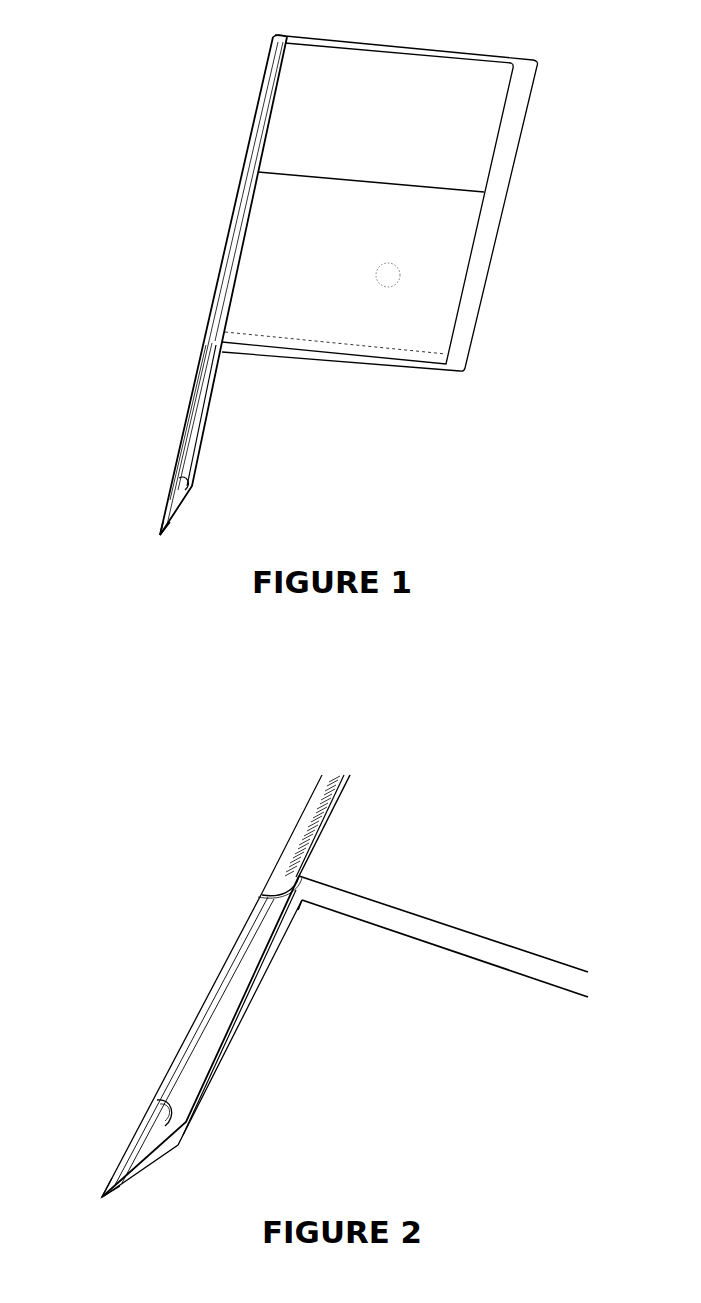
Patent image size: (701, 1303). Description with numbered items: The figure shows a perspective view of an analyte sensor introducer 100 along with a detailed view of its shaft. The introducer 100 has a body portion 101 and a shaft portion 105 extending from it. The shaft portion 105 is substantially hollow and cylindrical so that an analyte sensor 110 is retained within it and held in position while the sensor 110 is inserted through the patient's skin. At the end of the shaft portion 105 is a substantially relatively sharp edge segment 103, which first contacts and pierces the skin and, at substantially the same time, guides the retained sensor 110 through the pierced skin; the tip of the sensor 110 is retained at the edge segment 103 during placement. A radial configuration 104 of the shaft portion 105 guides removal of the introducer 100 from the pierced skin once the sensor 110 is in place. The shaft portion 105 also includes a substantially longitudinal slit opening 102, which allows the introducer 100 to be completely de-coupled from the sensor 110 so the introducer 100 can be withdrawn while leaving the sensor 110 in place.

In FIG. 1, the introducer 100 is at (350, 536).
In FIG. 1, the body portion 101 is at (495, 243).
In FIG. 2, the body portion 101 is at (520, 972).
In FIG. 1, the longitudinal slit opening 102 is at (208, 427).
In FIG. 2, the longitudinal slit opening 102 is at (233, 1027).
In FIG. 1, the edge segment 103 is at (168, 505).
In FIG. 2, the edge segment 103 is at (120, 1168).
In FIG. 1, the radial configuration 104 is at (183, 481).
In FIG. 2, the radial configuration 104 is at (163, 1097).
In FIG. 1, the shaft portion 105 is at (188, 428).
In FIG. 2, the shaft portion 105 is at (213, 983).
In FIG. 1, the analyte sensor 110 is at (228, 246).
In FIG. 2, the analyte sensor 110 is at (150, 1108).